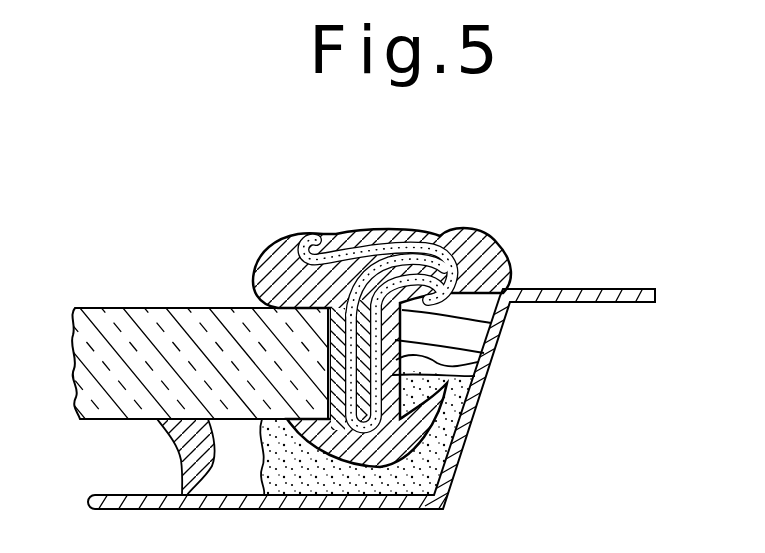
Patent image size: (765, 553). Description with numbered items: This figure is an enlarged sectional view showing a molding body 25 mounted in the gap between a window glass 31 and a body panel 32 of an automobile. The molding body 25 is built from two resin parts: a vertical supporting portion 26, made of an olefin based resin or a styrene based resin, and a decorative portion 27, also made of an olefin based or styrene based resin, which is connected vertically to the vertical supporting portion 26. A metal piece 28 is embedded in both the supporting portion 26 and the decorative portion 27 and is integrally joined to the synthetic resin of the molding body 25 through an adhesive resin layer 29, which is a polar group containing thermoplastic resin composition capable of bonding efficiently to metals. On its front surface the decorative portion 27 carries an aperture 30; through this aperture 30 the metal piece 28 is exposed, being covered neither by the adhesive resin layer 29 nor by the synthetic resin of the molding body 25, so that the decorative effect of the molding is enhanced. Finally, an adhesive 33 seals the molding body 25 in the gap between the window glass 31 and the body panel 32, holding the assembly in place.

The molding body 25 is at (280, 238).
The vertical supporting portion 26 is at (484, 353).
The decorative portion 27 is at (477, 232).
The metal piece 28 is at (491, 323).
The adhesive resin layer 29 is at (471, 377).
The aperture 30 is at (380, 230).
The window glass 31 is at (147, 330).
The body panel 32 is at (597, 288).
The adhesive 33 is at (422, 459).